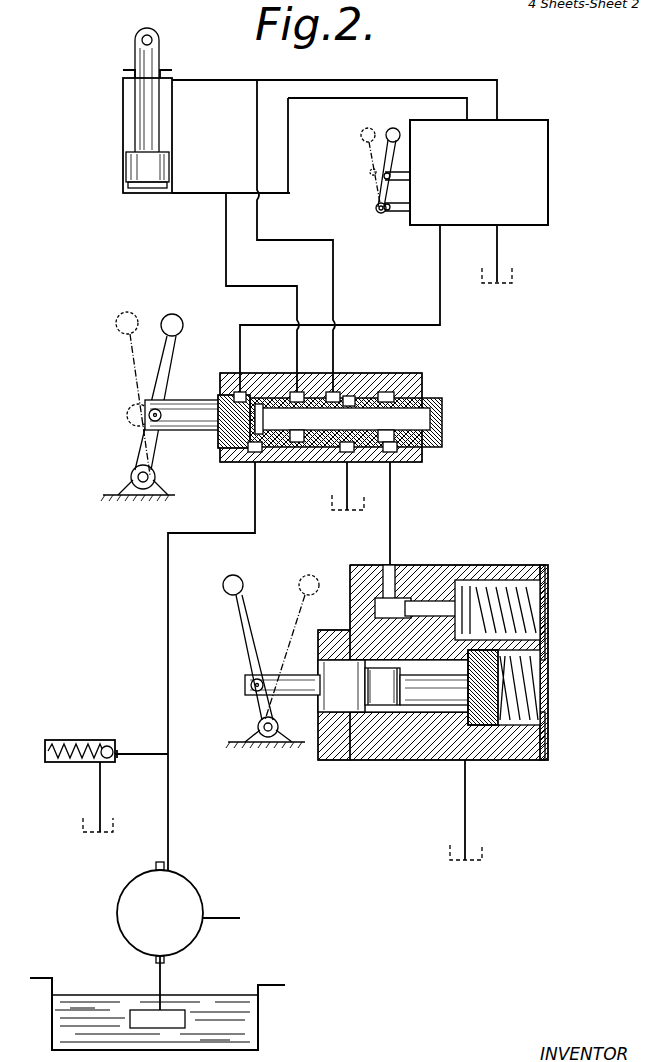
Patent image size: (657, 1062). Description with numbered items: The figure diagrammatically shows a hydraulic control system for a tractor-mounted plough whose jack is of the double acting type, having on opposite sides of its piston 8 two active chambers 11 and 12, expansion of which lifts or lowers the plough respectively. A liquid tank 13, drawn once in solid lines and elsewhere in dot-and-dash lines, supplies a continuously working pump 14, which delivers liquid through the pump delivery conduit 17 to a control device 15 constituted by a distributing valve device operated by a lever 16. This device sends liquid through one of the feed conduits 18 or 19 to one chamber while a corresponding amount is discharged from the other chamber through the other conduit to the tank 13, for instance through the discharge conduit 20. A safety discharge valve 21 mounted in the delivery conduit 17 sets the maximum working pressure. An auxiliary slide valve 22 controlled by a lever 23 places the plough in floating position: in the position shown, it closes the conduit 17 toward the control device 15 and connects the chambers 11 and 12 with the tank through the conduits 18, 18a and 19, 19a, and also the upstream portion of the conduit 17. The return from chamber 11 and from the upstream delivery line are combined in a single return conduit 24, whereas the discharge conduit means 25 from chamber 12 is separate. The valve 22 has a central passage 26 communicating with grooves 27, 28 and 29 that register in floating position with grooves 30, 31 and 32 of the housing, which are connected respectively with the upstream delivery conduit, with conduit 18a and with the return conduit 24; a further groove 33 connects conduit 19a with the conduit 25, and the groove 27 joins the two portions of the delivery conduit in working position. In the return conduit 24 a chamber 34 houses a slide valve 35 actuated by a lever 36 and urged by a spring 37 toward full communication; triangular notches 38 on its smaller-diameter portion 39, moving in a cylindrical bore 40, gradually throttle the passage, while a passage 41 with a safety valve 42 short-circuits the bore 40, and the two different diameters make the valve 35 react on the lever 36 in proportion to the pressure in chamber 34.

The piston 8 is at (134, 165).
The active chamber 11 is at (147, 189).
The active chamber 12 is at (123, 115).
The liquid tank 13 is at (258, 1021).
The pump 14 is at (160, 882).
The control device 15 is at (548, 171).
The lever 16 is at (392, 151).
The pump delivery conduit 17 is at (442, 325).
The feed conduit 18 is at (208, 193).
The conduit 18a is at (226, 255).
The feed conduit 19 is at (205, 80).
The conduit 19a is at (333, 283).
The discharge conduit 20 is at (499, 246).
The safety discharge valve 21 is at (86, 740).
The slide valve 22 is at (192, 400).
The lever 23 is at (160, 353).
The return conduit 24 is at (391, 519).
The discharge conduit means 25 is at (347, 484).
The central passage 26 is at (420, 378).
The groove 27 is at (244, 390).
The groove 28 is at (300, 390).
The groove 29 is at (390, 392).
The groove 30 is at (242, 455).
The groove 31 is at (262, 400).
The groove 32 is at (398, 458).
The groove 33 is at (348, 392).
The chamber 34 is at (390, 712).
The slide valve 35 is at (297, 696).
The lever 36 is at (300, 607).
The spring 37 is at (548, 717).
The triangular notches 38 is at (400, 708).
The portion of the slide valve 39 is at (366, 708).
The cylindrical bore 40 is at (445, 712).
The passage 41 is at (403, 600).
The safety valve 42 is at (457, 595).